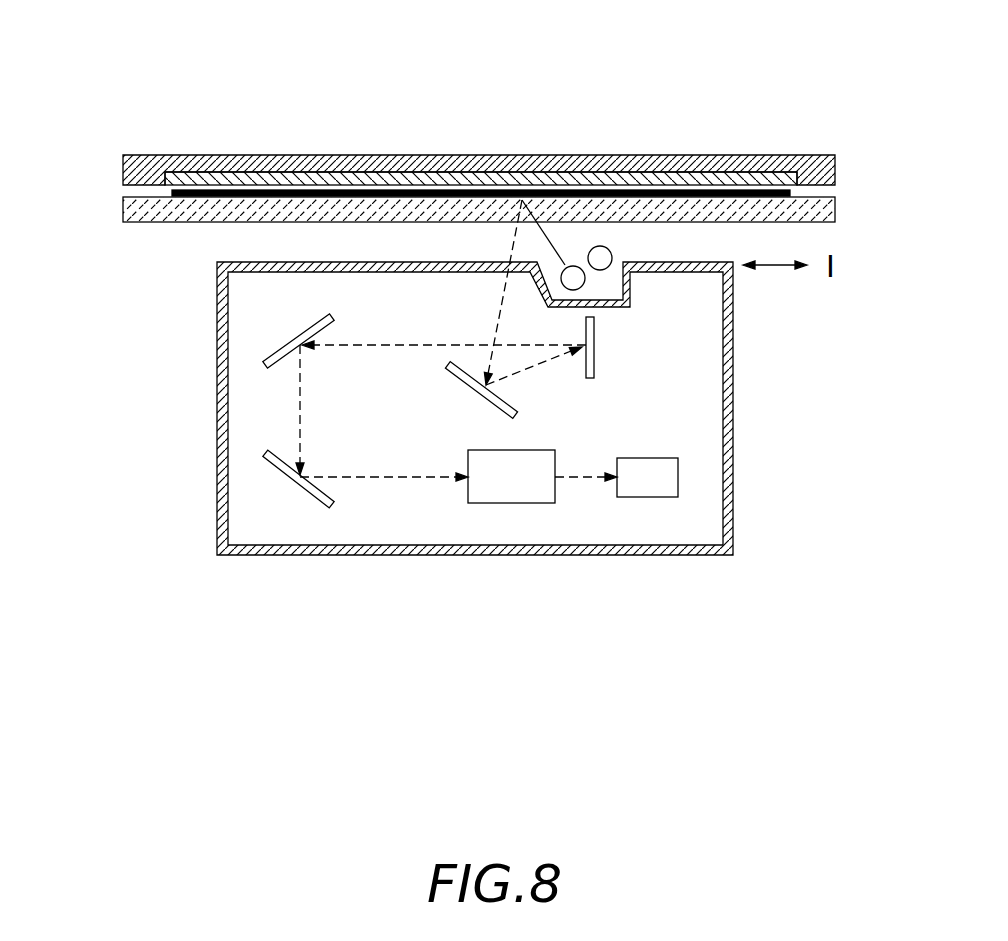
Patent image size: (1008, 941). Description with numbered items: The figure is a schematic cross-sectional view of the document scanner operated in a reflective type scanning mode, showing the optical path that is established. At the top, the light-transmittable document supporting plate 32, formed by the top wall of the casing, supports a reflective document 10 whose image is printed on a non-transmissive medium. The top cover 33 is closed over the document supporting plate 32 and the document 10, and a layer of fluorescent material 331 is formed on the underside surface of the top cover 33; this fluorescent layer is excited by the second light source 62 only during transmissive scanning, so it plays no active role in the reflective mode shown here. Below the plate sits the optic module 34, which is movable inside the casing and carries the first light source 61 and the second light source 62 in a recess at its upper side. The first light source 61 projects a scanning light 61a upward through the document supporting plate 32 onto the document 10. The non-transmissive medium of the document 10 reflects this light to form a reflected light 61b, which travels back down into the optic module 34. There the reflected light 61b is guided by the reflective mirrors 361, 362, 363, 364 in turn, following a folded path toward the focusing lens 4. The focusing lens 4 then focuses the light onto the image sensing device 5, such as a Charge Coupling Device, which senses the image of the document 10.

The top cover 33 is at (199, 166).
The layer of fluorescent material 331 is at (262, 178).
The reflective document 10 is at (336, 190).
The document supporting plate 32 is at (817, 162).
The optic module 34 is at (223, 443).
The first light source 61 is at (573, 266).
The scanning light 61a is at (566, 262).
The reflected light 61b is at (505, 243).
The second light source 62 is at (604, 252).
The reflective mirror 361 is at (595, 351).
The reflective mirror 362 is at (516, 410).
The reflective mirror 363 is at (288, 347).
The reflective mirror 364 is at (312, 493).
The focusing lens 4 is at (517, 495).
The image sensing device 5 is at (648, 488).